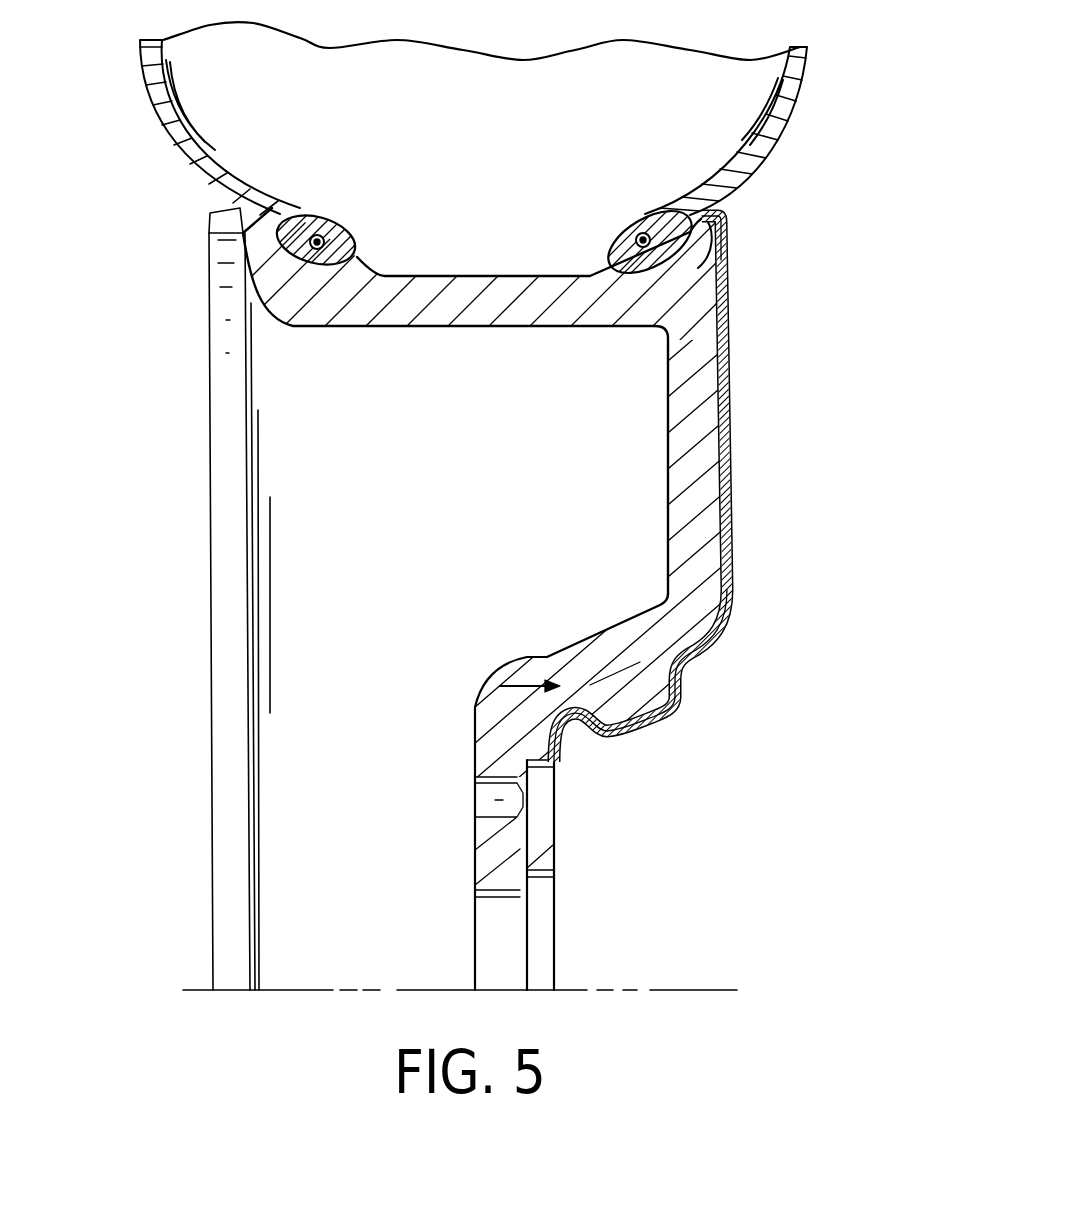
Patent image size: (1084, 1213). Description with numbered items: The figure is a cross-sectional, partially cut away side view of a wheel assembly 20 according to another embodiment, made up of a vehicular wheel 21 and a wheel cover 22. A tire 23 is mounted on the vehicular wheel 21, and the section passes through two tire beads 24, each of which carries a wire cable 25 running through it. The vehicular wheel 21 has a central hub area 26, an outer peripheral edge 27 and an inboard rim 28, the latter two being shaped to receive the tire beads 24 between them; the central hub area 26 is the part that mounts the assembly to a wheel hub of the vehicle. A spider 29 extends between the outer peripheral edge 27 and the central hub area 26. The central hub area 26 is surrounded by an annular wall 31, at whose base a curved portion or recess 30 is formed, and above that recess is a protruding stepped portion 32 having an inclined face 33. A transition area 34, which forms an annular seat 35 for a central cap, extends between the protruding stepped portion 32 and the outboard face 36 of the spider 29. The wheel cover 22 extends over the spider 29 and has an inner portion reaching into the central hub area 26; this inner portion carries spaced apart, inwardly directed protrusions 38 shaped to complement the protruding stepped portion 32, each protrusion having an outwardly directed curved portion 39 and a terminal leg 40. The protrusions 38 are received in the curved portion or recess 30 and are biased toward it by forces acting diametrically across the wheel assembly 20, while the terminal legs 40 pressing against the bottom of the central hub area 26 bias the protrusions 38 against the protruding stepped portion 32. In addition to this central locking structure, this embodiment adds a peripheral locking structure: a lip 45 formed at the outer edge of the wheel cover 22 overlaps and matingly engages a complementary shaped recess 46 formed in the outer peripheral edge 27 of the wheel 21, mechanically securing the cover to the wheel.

The wheel assembly 20 is at (150, 637).
The vehicular wheel 21 is at (307, 535).
The wheel cover 22 is at (712, 526).
The tire 23 is at (806, 97).
The tire beads 24 is at (338, 212).
The wire cable 25 is at (313, 238).
The central hub area 26 is at (718, 937).
The outer peripheral edge 27 is at (705, 211).
The inboard rim 28 is at (213, 222).
The spider 29 is at (668, 453).
The curved portion or recess 30 is at (473, 730).
The annular wall 31 is at (497, 673).
The protruding stepped portion 32 is at (645, 685).
The inclined face 33 is at (627, 683).
The transition area 34 is at (840, 645).
The annular seat 35 is at (690, 676).
The outboard face 36 is at (715, 380).
The inwardly directed protrusions 38 is at (660, 727).
The outwardly directed curved portions 39 is at (573, 733).
The terminal legs 40 is at (563, 728).
The lip 45 is at (722, 216).
The recess 46 is at (732, 290).